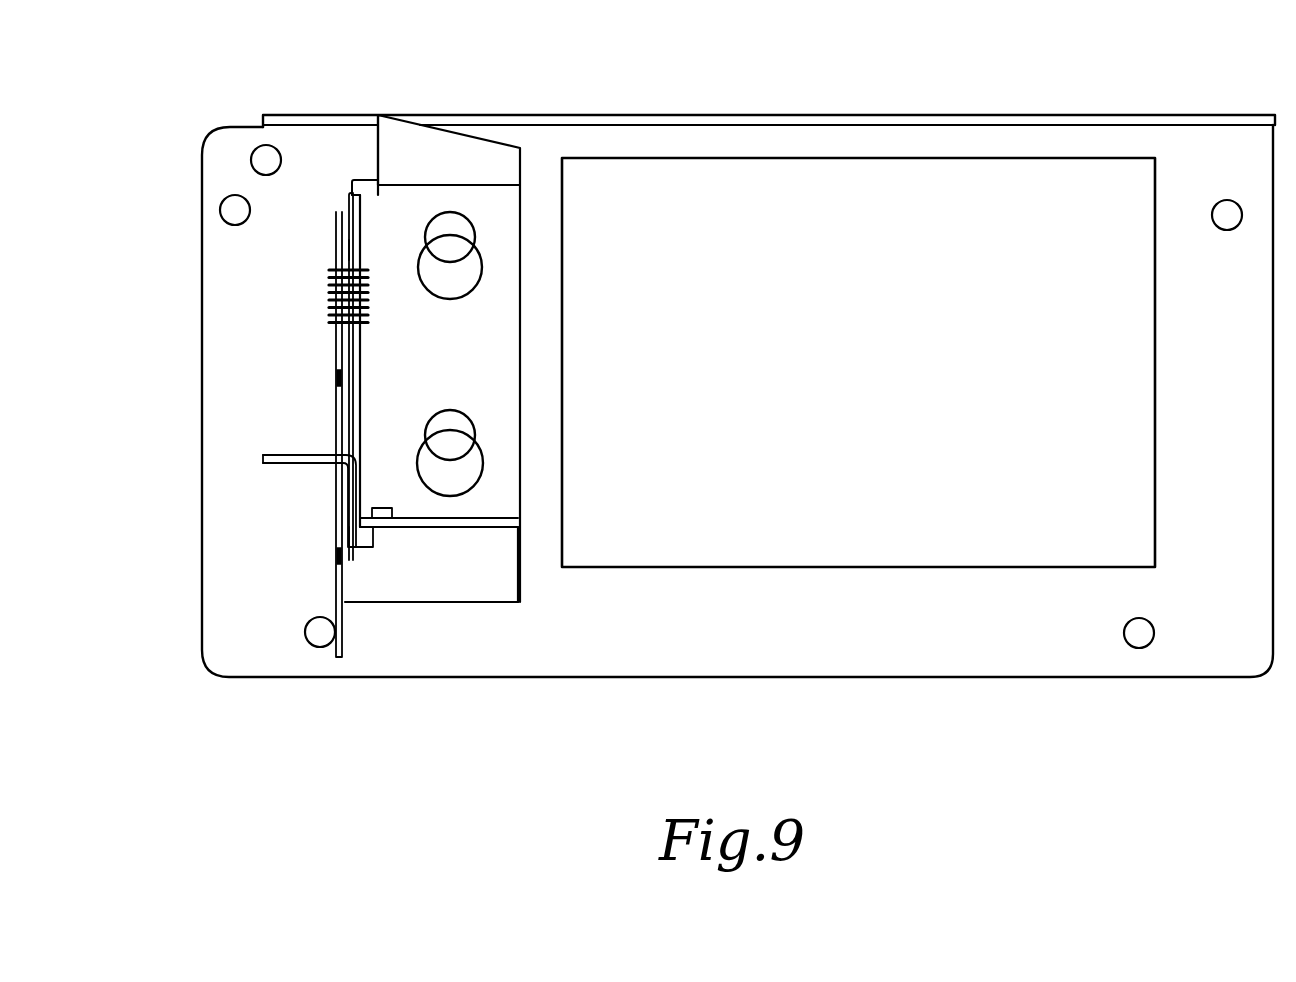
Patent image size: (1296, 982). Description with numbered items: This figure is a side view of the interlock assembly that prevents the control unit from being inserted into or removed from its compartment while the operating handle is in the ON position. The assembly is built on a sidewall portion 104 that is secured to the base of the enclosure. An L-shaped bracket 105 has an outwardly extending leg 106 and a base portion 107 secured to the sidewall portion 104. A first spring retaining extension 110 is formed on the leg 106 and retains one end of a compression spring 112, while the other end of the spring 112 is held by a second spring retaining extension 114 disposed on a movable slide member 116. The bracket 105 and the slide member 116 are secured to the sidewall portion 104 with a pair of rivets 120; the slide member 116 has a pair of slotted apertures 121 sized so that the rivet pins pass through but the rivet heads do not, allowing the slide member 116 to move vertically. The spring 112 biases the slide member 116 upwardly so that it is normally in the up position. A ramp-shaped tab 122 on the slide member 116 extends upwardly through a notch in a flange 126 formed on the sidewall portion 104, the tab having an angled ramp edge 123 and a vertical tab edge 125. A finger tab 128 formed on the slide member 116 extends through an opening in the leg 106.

The sidewall portion 104 is at (965, 677).
The L-shaped bracket 105 is at (415, 576).
The leg 106 is at (338, 658).
The base portion 107 is at (518, 585).
The first spring retaining extension 110 is at (337, 352).
The compression spring 112 is at (333, 293).
The second spring retaining extension 114 is at (352, 248).
The movable slide member 116 is at (428, 361).
The rivets 120 is at (482, 275).
The slotted apertures 121 is at (462, 230).
The ramp-shaped tab 122 is at (455, 145).
The angled ramp edge 123 is at (380, 115).
The vertical tab edge 125 is at (372, 153).
The flange 126 is at (1274, 115).
The finger tab 128 is at (265, 462).